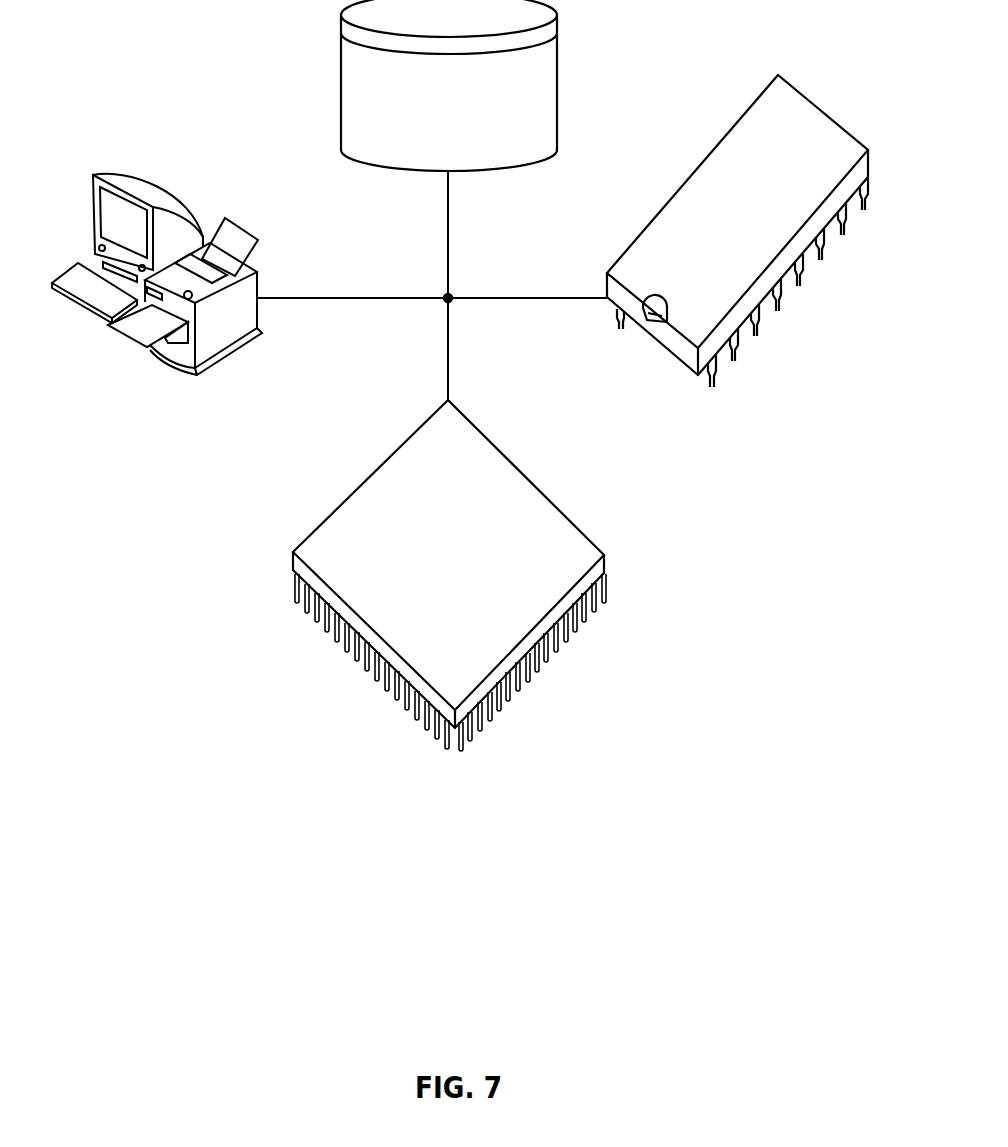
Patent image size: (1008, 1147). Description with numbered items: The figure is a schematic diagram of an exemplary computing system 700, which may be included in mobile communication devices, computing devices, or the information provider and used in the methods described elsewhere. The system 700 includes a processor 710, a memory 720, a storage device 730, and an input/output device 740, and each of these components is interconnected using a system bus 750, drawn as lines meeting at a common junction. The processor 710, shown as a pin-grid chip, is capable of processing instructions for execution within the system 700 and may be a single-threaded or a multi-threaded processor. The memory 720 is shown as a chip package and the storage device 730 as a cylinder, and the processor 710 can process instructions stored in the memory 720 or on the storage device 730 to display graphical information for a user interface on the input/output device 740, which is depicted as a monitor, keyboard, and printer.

The system 700 is at (163, 717).
The processor 710 is at (368, 472).
The memory 720 is at (690, 177).
The storage device 730 is at (338, 84).
The input/output device 740 is at (93, 174).
The system bus 750 is at (386, 298).